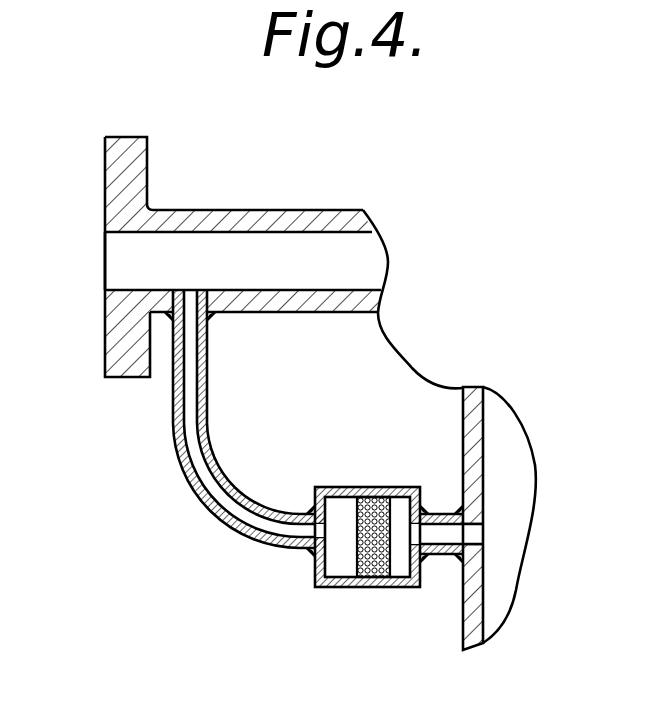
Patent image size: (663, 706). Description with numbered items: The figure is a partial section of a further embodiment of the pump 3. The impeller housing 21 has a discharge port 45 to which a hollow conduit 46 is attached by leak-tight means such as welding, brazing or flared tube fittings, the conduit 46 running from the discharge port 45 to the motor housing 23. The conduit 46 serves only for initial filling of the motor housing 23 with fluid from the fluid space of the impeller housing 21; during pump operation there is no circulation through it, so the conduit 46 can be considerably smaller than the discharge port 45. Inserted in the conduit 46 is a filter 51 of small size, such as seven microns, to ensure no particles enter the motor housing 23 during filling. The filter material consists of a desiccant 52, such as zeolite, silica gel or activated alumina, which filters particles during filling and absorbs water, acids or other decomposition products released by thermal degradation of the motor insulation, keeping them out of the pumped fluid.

The pump 3 is at (132, 482).
The impeller housing 21 is at (223, 210).
The discharge port 45 is at (128, 262).
The hollow conduit 46 is at (222, 515).
The filter 51 is at (342, 588).
The desiccant 52 is at (370, 497).
The motor housing 23 is at (463, 618).